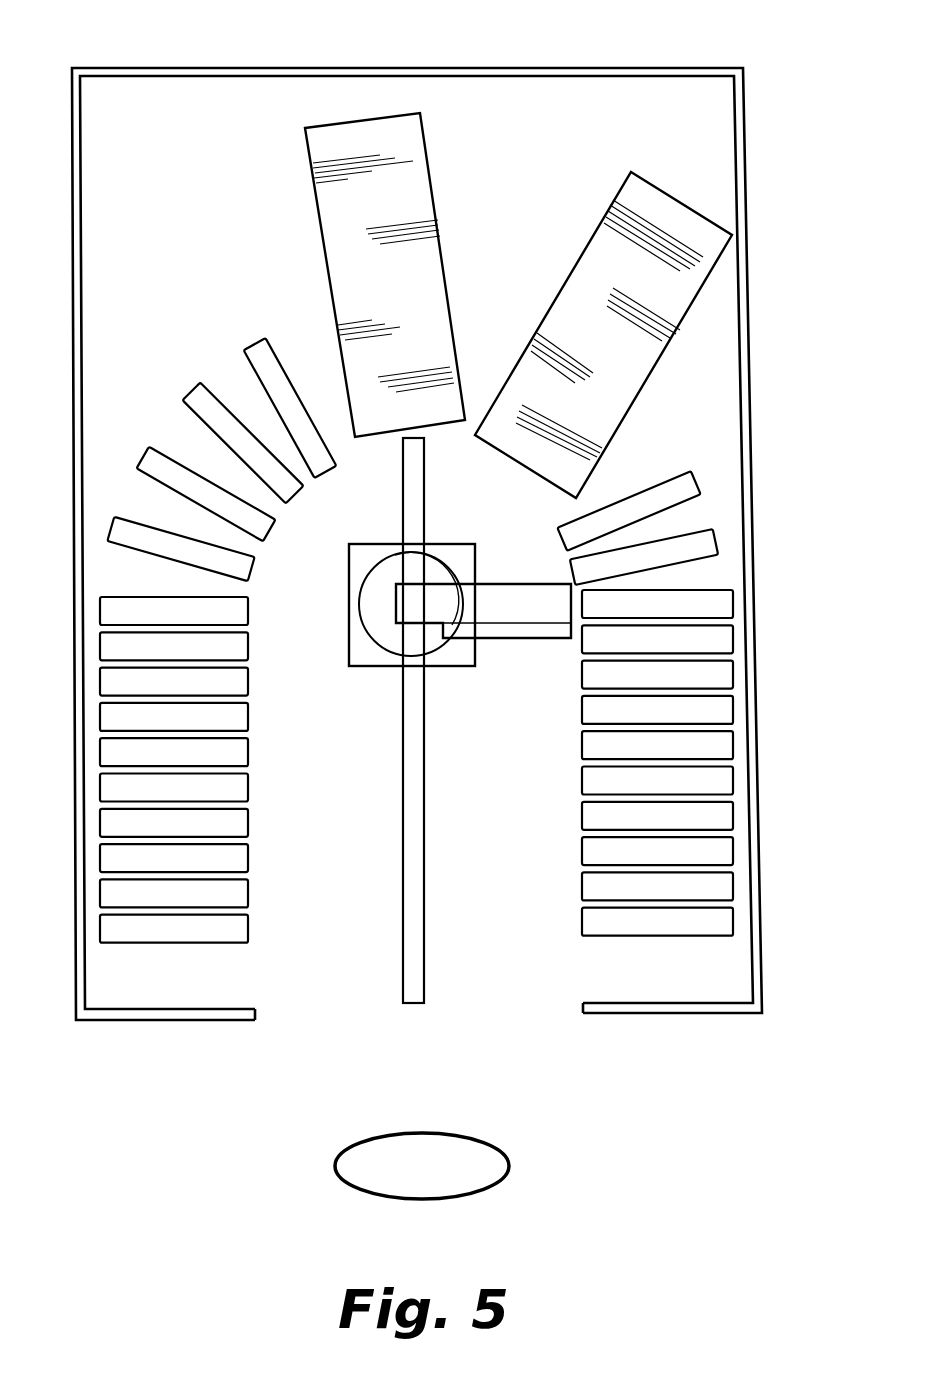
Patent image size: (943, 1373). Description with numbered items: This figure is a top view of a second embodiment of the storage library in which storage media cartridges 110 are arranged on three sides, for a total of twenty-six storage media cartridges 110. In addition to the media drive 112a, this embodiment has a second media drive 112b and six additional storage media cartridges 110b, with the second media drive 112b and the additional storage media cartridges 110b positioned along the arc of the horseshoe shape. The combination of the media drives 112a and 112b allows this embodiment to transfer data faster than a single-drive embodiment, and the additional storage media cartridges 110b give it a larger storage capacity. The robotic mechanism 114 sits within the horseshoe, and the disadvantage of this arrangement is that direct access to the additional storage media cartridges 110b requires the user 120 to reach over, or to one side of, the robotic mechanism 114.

The storage media cartridges 110 is at (63, 598).
The additional storage media cartridges 110b is at (236, 291).
The media drive 112a is at (353, 126).
The second media drive 112b is at (684, 198).
The robotic mechanism 114 is at (372, 692).
The user 120 is at (510, 1163).